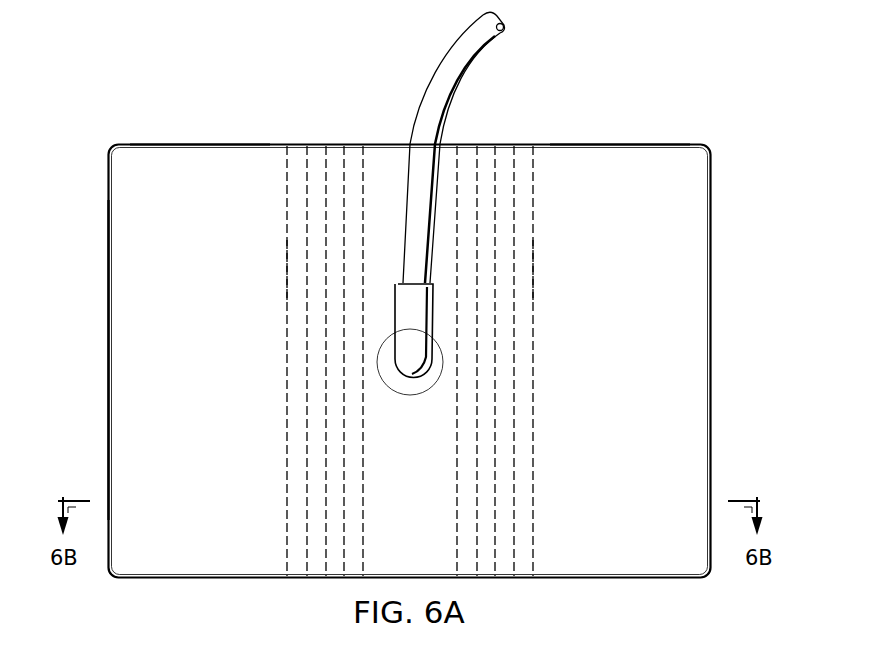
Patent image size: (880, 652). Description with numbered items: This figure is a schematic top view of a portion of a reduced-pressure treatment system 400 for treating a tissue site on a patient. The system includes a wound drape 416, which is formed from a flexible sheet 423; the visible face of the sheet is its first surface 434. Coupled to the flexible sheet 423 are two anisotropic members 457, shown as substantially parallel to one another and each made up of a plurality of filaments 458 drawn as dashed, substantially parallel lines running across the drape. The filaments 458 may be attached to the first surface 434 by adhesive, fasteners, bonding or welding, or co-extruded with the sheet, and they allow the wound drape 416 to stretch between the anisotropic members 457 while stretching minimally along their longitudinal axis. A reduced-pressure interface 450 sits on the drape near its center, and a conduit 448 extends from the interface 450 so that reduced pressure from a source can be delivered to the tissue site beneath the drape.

The reduced-pressure treatment system 400 is at (123, 64).
The wound drape 416 is at (99, 289).
The first surface 434 is at (202, 150).
The flexible sheet 423 is at (626, 153).
The anisotropic members 457 is at (311, 126).
The filaments 458 is at (285, 272).
The conduit 448 is at (445, 58).
The reduced-pressure interface 450 is at (410, 378).